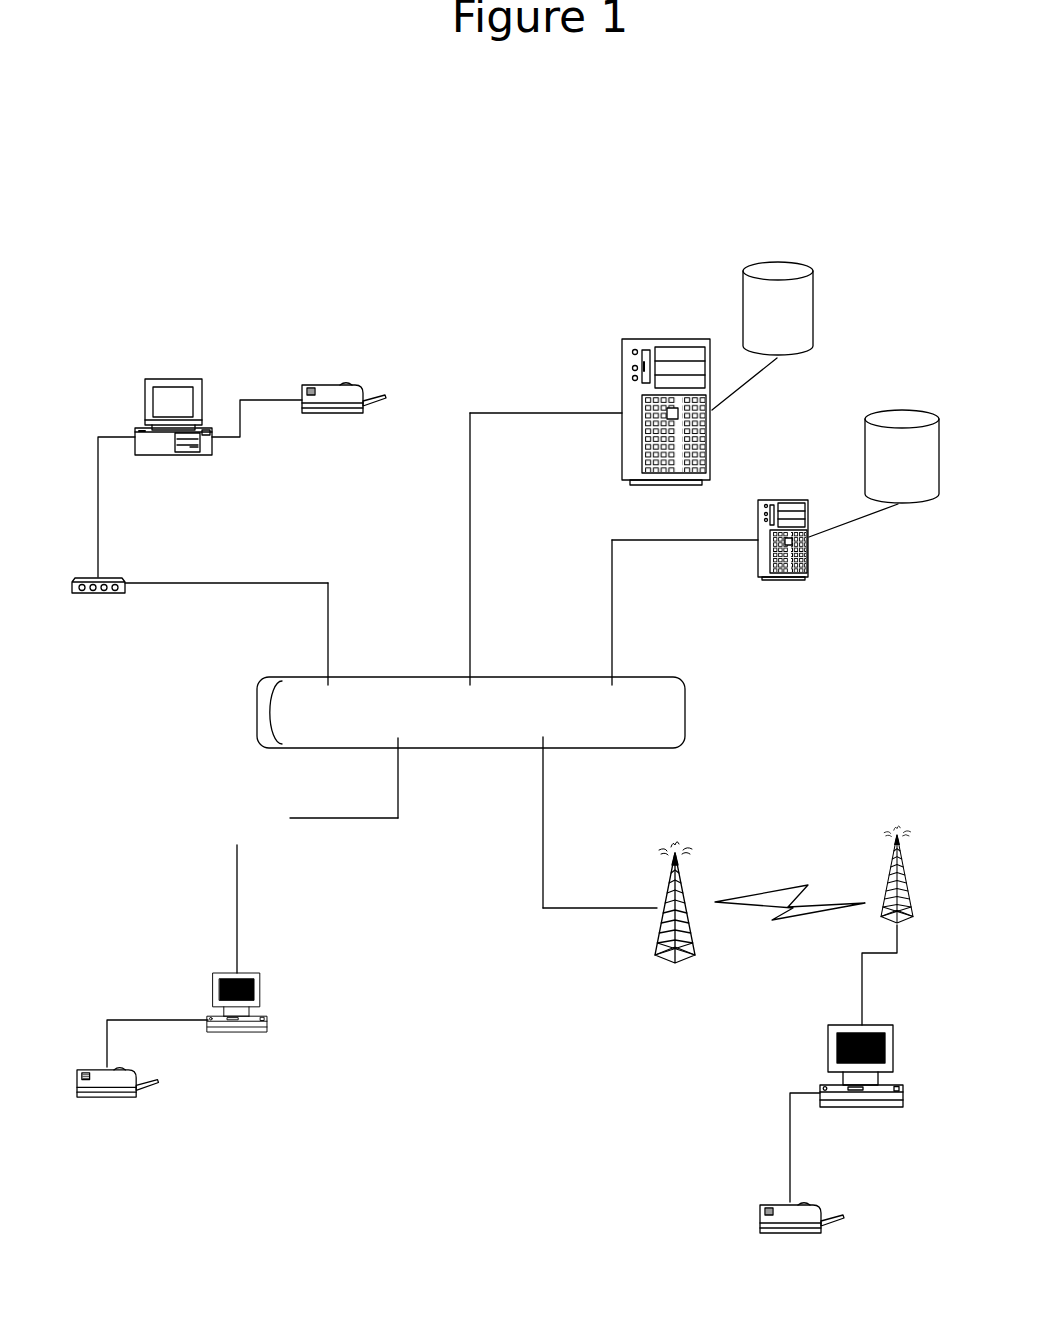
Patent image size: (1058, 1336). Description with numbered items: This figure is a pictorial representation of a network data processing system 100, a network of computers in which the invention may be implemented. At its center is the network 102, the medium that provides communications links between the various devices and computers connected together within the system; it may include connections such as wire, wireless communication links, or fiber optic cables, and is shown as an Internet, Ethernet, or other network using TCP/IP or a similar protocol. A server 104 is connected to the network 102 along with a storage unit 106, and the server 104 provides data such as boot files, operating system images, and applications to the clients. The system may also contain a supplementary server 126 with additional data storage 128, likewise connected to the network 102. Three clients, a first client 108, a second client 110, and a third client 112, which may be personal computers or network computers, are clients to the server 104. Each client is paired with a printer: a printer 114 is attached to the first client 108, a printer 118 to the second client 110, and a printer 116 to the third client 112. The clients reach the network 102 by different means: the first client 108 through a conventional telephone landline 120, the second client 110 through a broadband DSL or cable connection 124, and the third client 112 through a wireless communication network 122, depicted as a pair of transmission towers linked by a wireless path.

The network data processing system 100 is at (522, 152).
The network 102 is at (471, 660).
The server 104 is at (590, 425).
The storage unit 106 is at (762, 336).
The client 108 is at (200, 478).
The client 110 is at (187, 1020).
The client 112 is at (846, 1113).
The printer 114 is at (344, 409).
The printer 116 is at (802, 1230).
The printer 118 is at (117, 1096).
The conventional telephone landline 120 is at (200, 598).
The wireless communication network 122 is at (728, 925).
The broadband Digital Service Line (DSL) or cable 124 is at (293, 883).
The supplementary server 126 is at (710, 553).
The additional data storage 128 is at (874, 473).